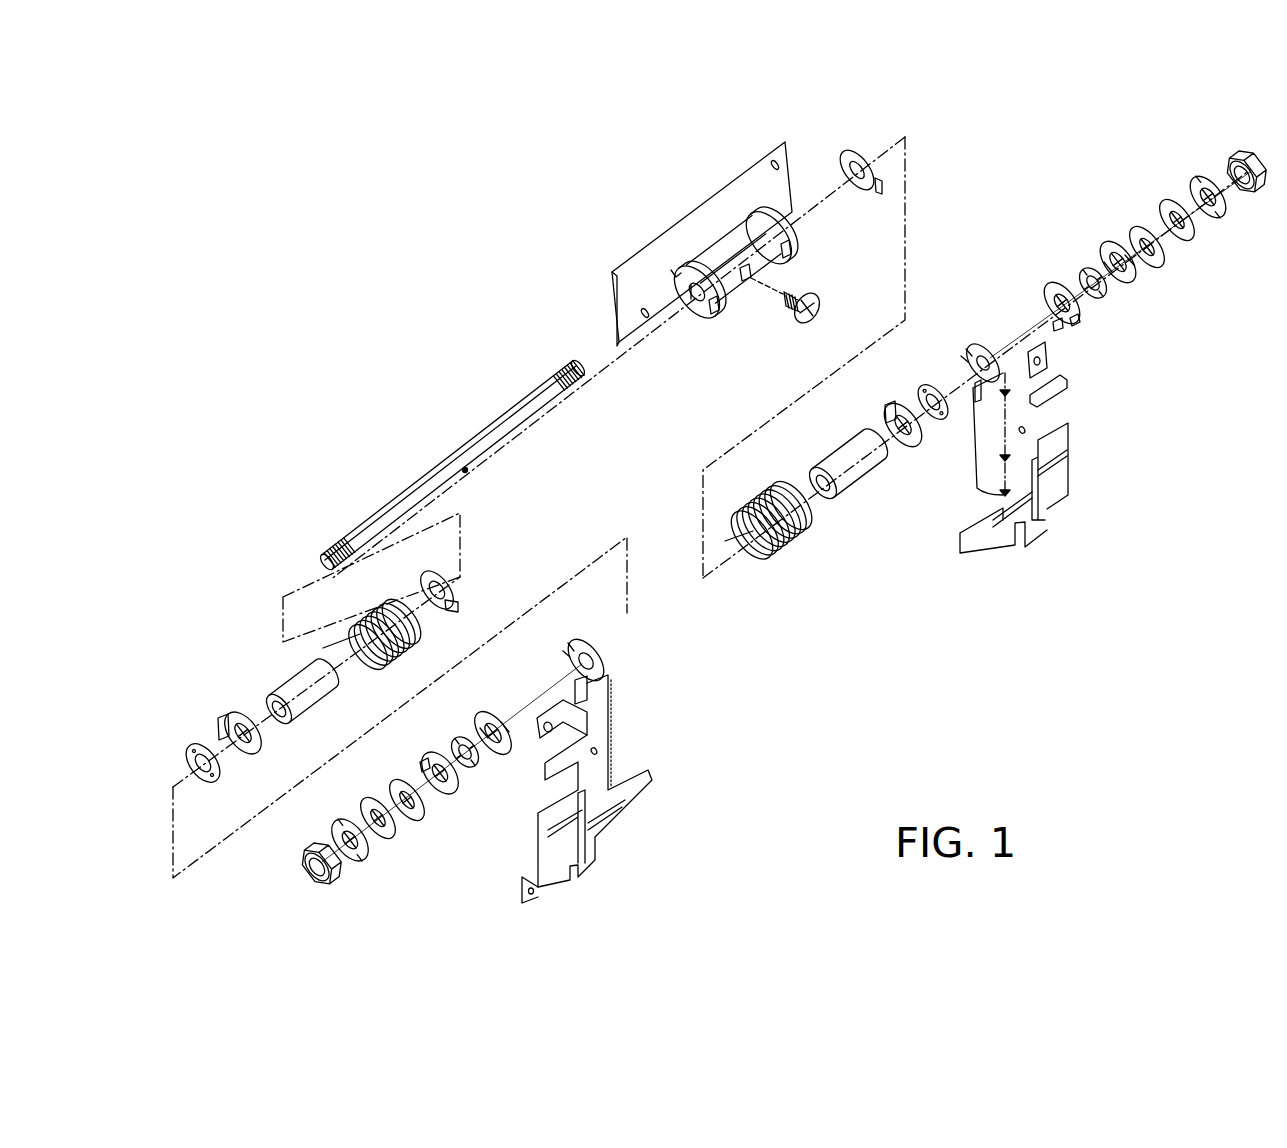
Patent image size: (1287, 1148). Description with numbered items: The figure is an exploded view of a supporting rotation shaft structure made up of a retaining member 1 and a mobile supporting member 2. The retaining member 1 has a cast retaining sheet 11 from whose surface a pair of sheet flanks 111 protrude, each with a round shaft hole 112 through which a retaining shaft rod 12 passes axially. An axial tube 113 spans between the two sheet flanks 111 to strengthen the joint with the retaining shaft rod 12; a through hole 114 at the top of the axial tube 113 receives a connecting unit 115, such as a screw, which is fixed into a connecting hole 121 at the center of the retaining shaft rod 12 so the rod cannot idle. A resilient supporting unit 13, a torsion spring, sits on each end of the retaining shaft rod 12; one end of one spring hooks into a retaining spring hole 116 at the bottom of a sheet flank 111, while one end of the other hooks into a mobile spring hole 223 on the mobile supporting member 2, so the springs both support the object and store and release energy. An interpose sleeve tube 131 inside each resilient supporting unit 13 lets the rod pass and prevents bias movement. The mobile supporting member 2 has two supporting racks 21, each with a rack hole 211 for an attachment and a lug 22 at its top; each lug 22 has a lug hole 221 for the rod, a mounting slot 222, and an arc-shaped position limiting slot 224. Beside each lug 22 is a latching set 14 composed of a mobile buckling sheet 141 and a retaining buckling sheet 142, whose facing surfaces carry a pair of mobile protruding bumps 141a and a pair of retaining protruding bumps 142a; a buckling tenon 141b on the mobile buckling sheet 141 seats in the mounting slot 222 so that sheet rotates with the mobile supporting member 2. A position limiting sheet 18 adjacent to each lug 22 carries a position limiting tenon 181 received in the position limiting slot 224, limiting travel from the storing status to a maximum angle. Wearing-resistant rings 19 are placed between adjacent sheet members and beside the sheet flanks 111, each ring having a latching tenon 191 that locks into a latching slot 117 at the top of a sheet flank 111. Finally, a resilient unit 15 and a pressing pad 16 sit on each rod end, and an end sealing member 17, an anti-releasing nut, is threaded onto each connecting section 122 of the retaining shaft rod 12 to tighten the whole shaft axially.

The retaining member 1 is at (578, 230).
The mobile supporting member 2 is at (1083, 552).
The retaining sheet 11 is at (677, 233).
The sheet flank 111 is at (790, 222).
The shaft hole 112 is at (688, 293).
The axial tube 113 is at (755, 253).
The through hole 114 is at (746, 282).
The connecting unit 115 is at (820, 303).
The retaining spring hole 116 is at (686, 297).
The latching slot 117 is at (791, 248).
The retaining shaft rod 12 is at (422, 490).
The connecting hole 121 is at (464, 468).
The connecting section 122 is at (570, 372).
The resilient supporting unit 13 is at (392, 657).
The interpose sleeve tube 131 is at (297, 683).
The latching set 14 is at (423, 745).
The mobile buckling sheet 141 is at (1082, 308).
The mobile protruding bump 141a is at (1074, 324).
The buckling tenon 141b is at (1060, 328).
The retaining buckling sheet 142 is at (1113, 248).
The retaining protruding bump 142a is at (1132, 265).
The resilient unit 15 is at (357, 797).
The pressing pad 16 is at (357, 858).
The end sealing member 17 is at (298, 866).
The position limiting sheet 18 is at (255, 742).
The position limiting tenon 181 is at (221, 722).
The wearing-resistant ring 19 is at (845, 153).
The latching tenon 191 is at (882, 188).
The supporting rack 21 is at (605, 731).
The rack hole 211 is at (550, 754).
The lug 22 is at (604, 668).
The lug hole 221 is at (594, 652).
The mounting slot 222 is at (574, 680).
The mobile spring hole 223 is at (995, 393).
The position limiting slot 224 is at (575, 650).